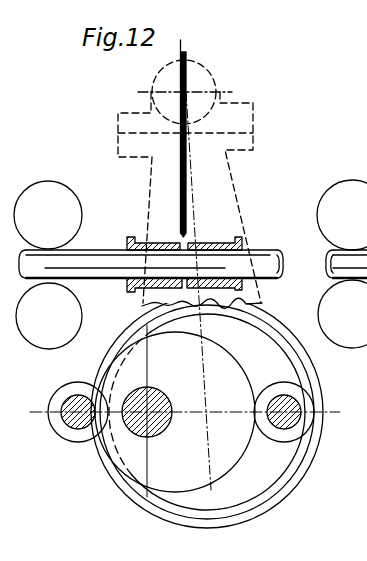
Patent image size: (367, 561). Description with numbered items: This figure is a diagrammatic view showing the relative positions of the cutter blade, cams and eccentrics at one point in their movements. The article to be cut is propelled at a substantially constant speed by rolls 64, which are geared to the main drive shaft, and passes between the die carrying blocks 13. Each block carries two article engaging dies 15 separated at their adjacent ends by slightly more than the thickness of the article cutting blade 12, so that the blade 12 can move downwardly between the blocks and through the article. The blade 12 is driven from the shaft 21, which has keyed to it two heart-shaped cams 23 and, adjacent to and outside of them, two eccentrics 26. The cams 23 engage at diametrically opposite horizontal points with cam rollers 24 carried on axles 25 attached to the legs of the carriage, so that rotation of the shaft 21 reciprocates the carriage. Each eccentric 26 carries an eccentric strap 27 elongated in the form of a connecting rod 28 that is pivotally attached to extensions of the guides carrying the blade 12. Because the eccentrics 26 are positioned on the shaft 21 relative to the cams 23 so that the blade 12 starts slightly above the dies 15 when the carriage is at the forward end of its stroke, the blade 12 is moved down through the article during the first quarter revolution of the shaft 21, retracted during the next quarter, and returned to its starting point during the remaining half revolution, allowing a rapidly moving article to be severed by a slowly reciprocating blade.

The article cutting blade 12 is at (185, 55).
The die carrying blocks 13 is at (157, 242).
The article engaging dies 15 is at (237, 238).
The shaft 21 is at (158, 391).
The heart-shaped cams 23 is at (219, 348).
The cam rollers 24 is at (55, 431).
The axles 25 is at (68, 422).
The eccentrics 26 is at (285, 470).
The eccentric strap 27 is at (275, 500).
The connecting rod 28 is at (232, 140).
The rolls 64 is at (49, 181).